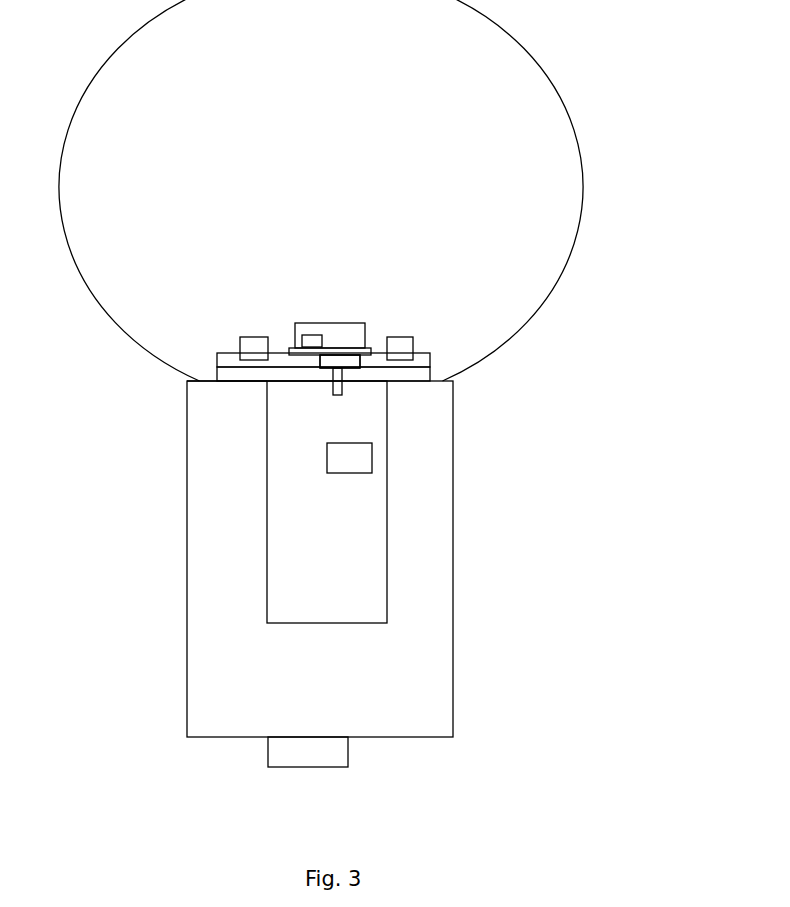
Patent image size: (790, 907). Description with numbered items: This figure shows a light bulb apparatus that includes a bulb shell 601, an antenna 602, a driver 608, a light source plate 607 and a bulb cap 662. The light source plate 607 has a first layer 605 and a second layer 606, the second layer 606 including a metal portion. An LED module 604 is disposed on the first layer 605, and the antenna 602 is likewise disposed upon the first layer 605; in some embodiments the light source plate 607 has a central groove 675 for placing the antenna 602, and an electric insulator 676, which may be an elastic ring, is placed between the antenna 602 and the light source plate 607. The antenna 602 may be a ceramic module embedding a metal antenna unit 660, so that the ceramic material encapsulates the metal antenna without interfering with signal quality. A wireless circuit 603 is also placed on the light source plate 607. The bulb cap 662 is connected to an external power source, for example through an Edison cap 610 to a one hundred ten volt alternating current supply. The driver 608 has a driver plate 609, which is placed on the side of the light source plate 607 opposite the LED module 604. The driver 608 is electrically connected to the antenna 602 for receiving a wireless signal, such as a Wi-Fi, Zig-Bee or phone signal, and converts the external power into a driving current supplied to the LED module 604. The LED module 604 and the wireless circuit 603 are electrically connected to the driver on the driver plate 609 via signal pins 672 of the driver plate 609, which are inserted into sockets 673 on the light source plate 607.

The bulb shell 601 is at (523, 137).
The antenna 602 is at (327, 348).
The wireless circuit 603 is at (405, 343).
The LED module 604 is at (255, 353).
The first layer 605 is at (428, 357).
The second layer 606 is at (410, 375).
The light source plate 607 is at (238, 382).
The driver 608 is at (360, 459).
The driver plate 609 is at (372, 526).
The Edison cap 610 is at (328, 758).
The metal antenna unit 660 is at (320, 345).
The bulb cap 662 is at (205, 662).
The signal pins 672 is at (335, 395).
The sockets 673 is at (323, 362).
The central groove 675 is at (352, 356).
The electric insulator 676 is at (347, 350).